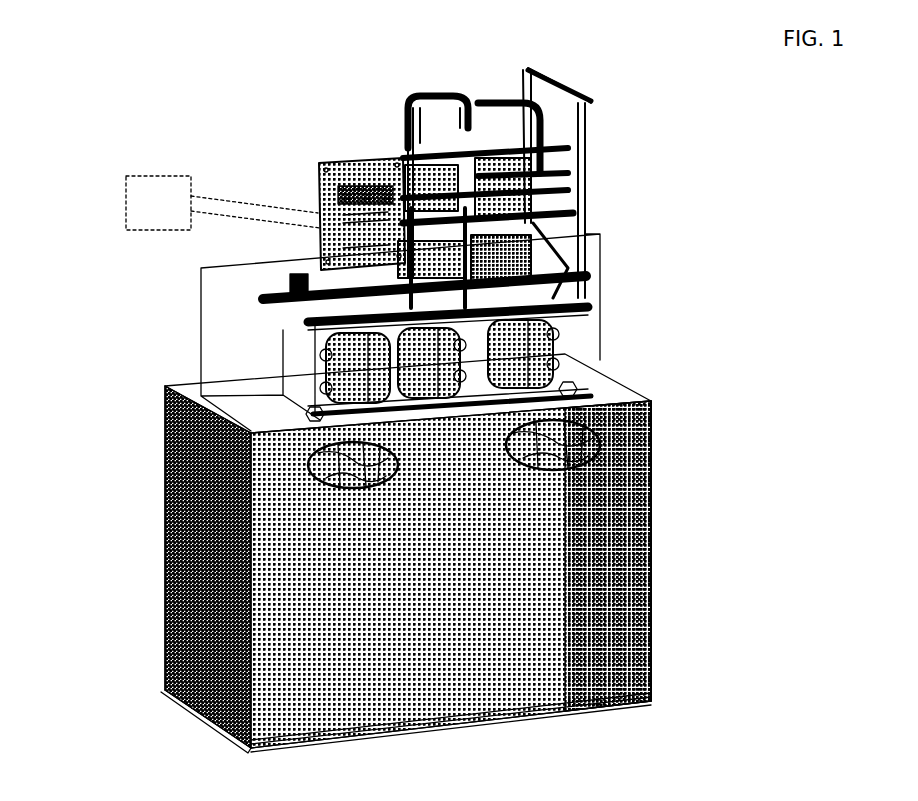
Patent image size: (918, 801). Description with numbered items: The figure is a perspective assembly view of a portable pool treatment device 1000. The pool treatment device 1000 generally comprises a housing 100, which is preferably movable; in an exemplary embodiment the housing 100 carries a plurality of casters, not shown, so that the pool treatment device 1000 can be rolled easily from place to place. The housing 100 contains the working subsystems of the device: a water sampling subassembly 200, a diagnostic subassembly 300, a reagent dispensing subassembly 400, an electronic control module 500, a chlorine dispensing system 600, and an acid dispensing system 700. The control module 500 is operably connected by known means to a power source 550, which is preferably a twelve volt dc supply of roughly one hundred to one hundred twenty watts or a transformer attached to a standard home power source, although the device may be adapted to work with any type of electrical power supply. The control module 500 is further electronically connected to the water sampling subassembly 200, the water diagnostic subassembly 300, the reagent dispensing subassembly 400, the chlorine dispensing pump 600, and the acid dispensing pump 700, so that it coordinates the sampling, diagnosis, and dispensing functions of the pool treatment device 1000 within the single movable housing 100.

The pool treatment device 1000 is at (706, 258).
The housing 100 is at (157, 376).
The water sampling subassembly 200 is at (393, 100).
The diagnostic subassembly 300 is at (525, 237).
The reagent dispensing subassembly 400 is at (518, 150).
The electronic control module 500 is at (311, 155).
The power source 550 is at (120, 192).
The chlorine dispensing system 600 is at (157, 548).
The acid dispensing system 700 is at (645, 452).